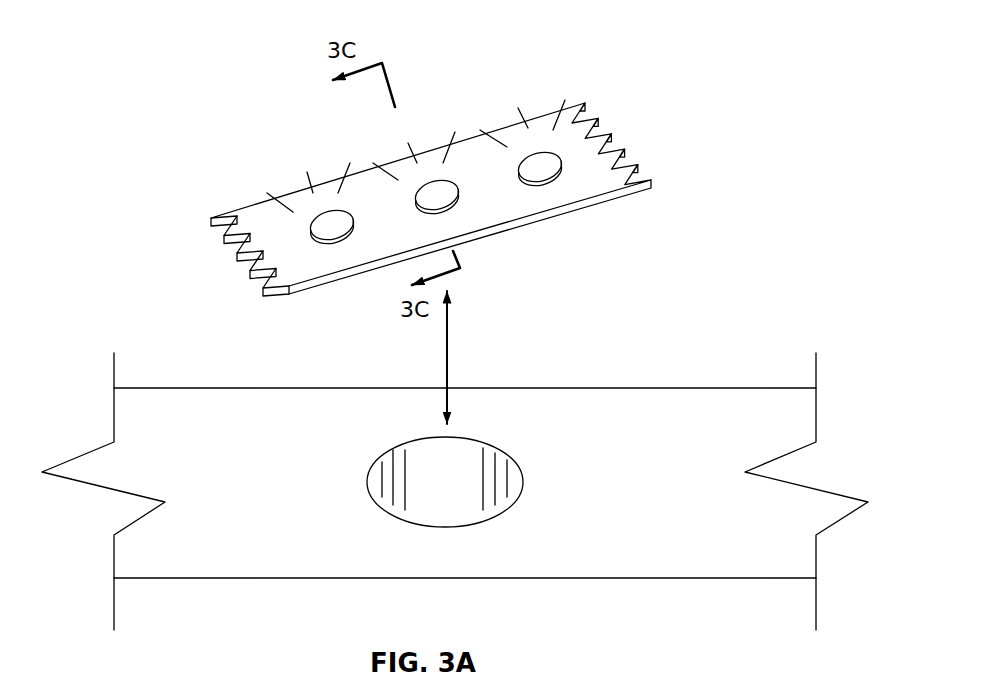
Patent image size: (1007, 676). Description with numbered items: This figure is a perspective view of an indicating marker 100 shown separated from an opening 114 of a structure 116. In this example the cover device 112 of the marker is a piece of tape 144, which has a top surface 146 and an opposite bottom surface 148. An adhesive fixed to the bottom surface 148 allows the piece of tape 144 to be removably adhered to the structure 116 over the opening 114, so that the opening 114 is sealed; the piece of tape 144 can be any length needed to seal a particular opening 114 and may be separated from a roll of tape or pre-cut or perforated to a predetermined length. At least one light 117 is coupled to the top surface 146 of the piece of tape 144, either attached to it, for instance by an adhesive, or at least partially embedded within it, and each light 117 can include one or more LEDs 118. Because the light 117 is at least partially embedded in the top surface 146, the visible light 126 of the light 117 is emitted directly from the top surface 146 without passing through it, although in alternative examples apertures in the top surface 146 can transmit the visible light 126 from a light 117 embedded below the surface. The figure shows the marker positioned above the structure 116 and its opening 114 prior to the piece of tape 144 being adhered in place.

The indicating marker 100 is at (624, 78).
The cover device 112 is at (584, 201).
The opening 114 is at (455, 507).
The structure 116 is at (553, 417).
The light 117 is at (353, 211).
The LED 118 is at (332, 228).
The visible light 126 is at (308, 173).
The piece of tape 144 is at (604, 178).
The top surface 146 is at (257, 214).
The bottom surface 148 is at (307, 292).